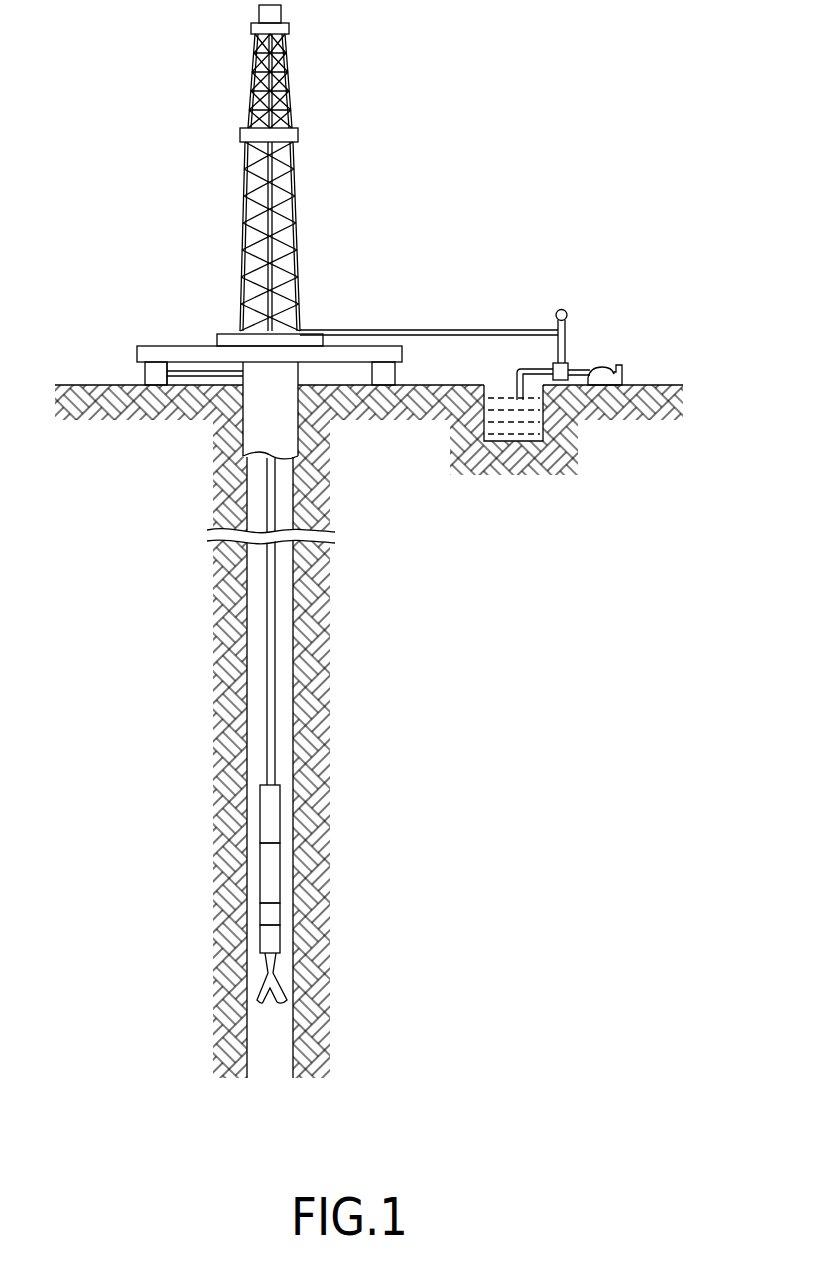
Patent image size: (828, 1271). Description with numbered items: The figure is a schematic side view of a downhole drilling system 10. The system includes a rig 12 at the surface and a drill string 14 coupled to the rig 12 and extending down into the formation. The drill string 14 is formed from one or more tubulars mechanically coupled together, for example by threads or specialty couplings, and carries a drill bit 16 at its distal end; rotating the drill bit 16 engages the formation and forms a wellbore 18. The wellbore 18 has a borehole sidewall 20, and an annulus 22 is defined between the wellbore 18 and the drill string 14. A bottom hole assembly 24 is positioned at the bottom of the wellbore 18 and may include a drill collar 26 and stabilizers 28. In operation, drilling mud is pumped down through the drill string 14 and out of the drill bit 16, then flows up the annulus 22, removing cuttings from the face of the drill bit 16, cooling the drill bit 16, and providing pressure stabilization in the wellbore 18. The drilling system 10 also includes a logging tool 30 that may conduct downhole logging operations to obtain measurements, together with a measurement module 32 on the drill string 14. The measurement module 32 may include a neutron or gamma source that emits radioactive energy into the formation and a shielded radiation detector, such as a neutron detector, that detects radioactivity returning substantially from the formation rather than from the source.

The downhole drilling system 10 is at (369, 541).
The rig 12 is at (293, 205).
The drill string 14 is at (275, 623).
The drill bit 16 is at (268, 982).
The wellbore 18 is at (295, 803).
The borehole sidewall 20 is at (249, 733).
The annulus 22 is at (287, 722).
The bottom hole assembly 24 is at (272, 895).
The drill collar 26 is at (268, 870).
The stabilizers 28 is at (268, 913).
The logging tool 30 is at (268, 943).
The measurement module 32 is at (268, 812).